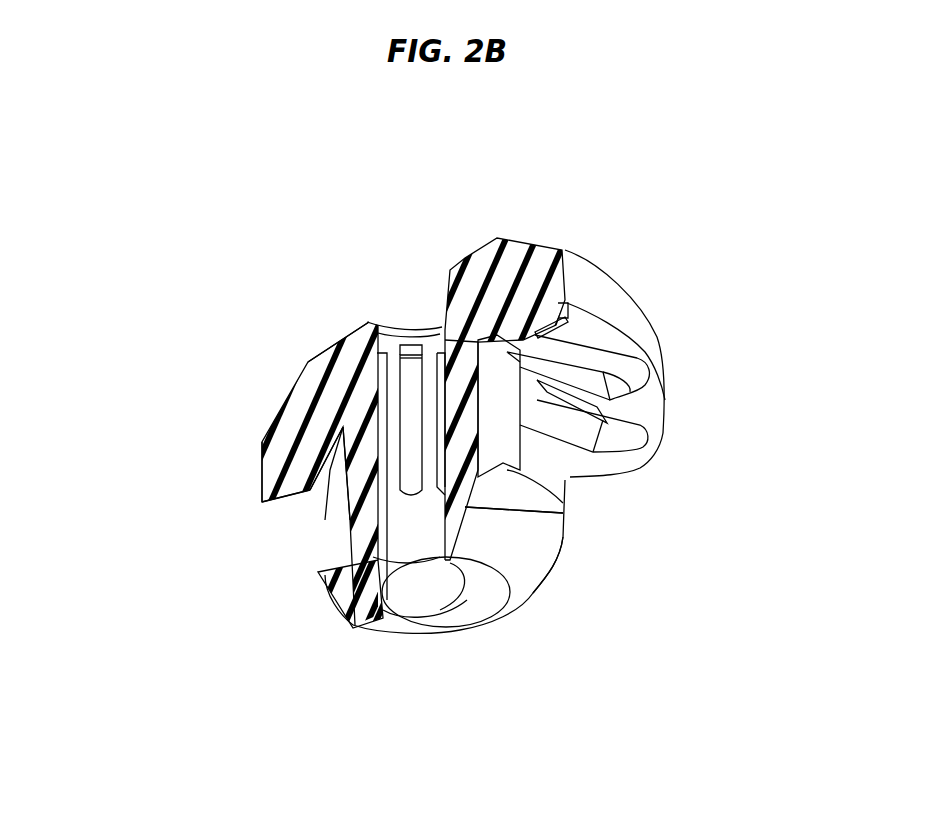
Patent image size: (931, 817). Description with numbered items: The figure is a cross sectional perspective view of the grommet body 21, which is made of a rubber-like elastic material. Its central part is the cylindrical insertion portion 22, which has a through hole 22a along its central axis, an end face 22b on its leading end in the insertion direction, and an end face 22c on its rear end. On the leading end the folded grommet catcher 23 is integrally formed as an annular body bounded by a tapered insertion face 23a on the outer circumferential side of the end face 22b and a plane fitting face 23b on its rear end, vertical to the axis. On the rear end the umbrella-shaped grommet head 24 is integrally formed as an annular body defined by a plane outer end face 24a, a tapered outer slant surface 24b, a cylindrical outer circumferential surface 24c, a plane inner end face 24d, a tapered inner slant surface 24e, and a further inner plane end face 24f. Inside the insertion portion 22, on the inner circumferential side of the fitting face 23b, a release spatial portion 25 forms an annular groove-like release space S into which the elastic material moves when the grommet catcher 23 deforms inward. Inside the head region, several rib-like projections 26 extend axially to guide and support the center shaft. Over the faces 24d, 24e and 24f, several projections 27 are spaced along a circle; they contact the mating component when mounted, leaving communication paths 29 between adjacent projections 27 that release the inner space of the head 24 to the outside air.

The grommet body 21 is at (621, 252).
The cylindrical insertion portion 22 is at (342, 540).
The through hole 22a is at (413, 593).
The end face 22b is at (380, 622).
The end face 22c is at (357, 323).
The folded grommet catcher 23 is at (567, 520).
The tapered insertion face 23a is at (520, 557).
The plane fitting face 23b is at (560, 507).
The umbrella-shaped grommet head 24 is at (517, 250).
The plane outer end face 24a is at (322, 348).
The tapered outer slant surface 24b is at (290, 388).
The cylindrical outer circumferential surface 24c is at (257, 472).
The plane inner end face 24d is at (267, 505).
The tapered inner slant surface 24e is at (325, 520).
The plane inner end face 24f is at (343, 553).
The release spatial portion 25 is at (440, 587).
The rib-like projections 26 is at (408, 370).
The projections 27 is at (657, 373).
The communication paths 29 is at (628, 385).
The release space S is at (330, 583).